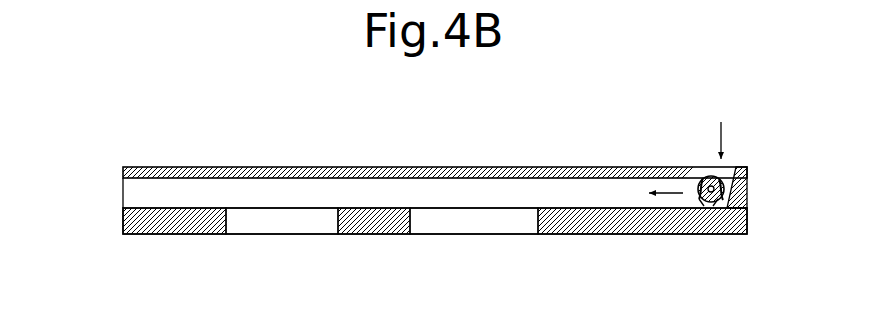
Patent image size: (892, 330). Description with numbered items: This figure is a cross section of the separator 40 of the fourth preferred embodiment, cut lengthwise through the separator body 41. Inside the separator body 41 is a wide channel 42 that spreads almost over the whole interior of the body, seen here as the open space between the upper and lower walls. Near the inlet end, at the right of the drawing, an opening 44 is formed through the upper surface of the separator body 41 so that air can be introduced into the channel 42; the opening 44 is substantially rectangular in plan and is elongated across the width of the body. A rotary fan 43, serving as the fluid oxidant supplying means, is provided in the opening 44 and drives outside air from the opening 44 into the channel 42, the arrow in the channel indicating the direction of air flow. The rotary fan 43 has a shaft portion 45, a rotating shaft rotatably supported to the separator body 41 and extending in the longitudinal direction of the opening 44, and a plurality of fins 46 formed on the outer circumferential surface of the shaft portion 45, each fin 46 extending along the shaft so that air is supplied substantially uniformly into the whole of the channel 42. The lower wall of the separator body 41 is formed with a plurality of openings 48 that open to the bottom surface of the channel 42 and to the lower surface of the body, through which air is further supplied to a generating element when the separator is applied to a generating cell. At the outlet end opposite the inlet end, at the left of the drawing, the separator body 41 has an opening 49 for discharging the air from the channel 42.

The separator 40 is at (180, 121).
The separator body 41 is at (110, 166).
The channel 42 is at (395, 192).
The rotary fan 43 is at (701, 201).
The opening 44 is at (740, 167).
The shaft portion 45 is at (716, 203).
The fin 46 is at (708, 172).
The openings 48 is at (338, 223).
The opening 49 is at (122, 200).